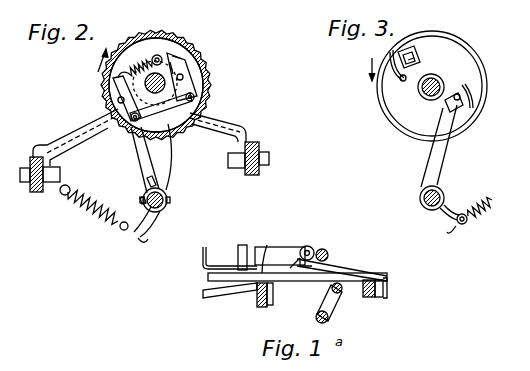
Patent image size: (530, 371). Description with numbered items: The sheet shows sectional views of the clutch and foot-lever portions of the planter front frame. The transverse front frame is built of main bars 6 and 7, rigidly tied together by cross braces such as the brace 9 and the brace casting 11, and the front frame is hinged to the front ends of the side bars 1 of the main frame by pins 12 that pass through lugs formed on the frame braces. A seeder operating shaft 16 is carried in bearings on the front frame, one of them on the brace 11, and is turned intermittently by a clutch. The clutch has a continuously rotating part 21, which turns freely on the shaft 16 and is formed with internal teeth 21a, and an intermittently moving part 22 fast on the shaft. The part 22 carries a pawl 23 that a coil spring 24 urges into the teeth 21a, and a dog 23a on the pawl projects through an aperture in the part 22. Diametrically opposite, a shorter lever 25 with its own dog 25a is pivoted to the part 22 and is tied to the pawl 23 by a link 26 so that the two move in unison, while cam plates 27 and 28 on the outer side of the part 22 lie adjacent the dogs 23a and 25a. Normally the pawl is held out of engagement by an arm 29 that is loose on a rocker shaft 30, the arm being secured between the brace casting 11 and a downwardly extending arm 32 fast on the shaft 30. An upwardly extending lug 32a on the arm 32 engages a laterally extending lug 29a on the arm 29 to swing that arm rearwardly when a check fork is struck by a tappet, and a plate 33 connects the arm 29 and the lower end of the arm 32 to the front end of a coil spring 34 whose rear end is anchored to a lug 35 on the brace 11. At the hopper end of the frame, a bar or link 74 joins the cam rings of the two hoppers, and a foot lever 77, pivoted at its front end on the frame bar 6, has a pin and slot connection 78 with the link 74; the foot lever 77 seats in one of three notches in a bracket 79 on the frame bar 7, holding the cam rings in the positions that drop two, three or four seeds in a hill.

In FIG. 1A, the side bar 1 is at (278, 250).
In FIG. 2, the main bar 6 is at (253, 175).
In FIG. 1A, the main bar 6 is at (370, 298).
In FIG. 2, the main bar 7 is at (34, 192).
In FIG. 1A, the main bar 7 is at (262, 306).
In FIG. 1A, the cross brace 9 is at (360, 272).
In FIG. 2, the cross brace 11 is at (244, 128).
In FIG. 1A, the pin 12 is at (308, 246).
In FIG. 2, the seeder operating shaft 16 is at (146, 82).
In FIG. 3, the seeder operating shaft 16 is at (422, 92).
In FIG. 1A, the seeder operating shaft 16 is at (328, 254).
In FIG. 2, the continuously rotating part 21 is at (202, 46).
In FIG. 3, the continuously rotating part 21 is at (487, 62).
In FIG. 2, the internal teeth 21a is at (204, 93).
In FIG. 2, the intermittently moving part 22 is at (198, 78).
In FIG. 3, the intermittently moving part 22 is at (468, 46).
In FIG. 2, the pawl 23 is at (116, 100).
In FIG. 3, the dog 23a is at (446, 108).
In FIG. 2, the coil spring 24 is at (158, 55).
In FIG. 2, the lever 25 is at (188, 64).
In FIG. 3, the lever 25 is at (418, 56).
In FIG. 3, the dog 25a is at (420, 60).
In FIG. 2, the link 26 is at (177, 128).
In FIG. 3, the cam plate 27 is at (474, 98).
In FIG. 3, the cam plate 28 is at (398, 80).
In FIG. 2, the arm 29 is at (141, 152).
In FIG. 3, the arm 29 is at (448, 153).
In FIG. 2, the lug 29a is at (148, 180).
In FIG. 2, the rocker shaft 30 is at (167, 206).
In FIG. 3, the rocker shaft 30 is at (422, 206).
In FIG. 2, the arm 32 is at (143, 239).
In FIG. 3, the arm 32 is at (449, 236).
In FIG. 2, the lug 32a is at (140, 200).
In FIG. 2, the plate 33 is at (124, 231).
In FIG. 2, the coil spring 34 is at (90, 212).
In FIG. 3, the coil spring 34 is at (486, 197).
In FIG. 2, the lug 35 is at (64, 196).
In FIG. 1A, the link 74 is at (220, 278).
In FIG. 1A, the foot lever 77 is at (338, 274).
In FIG. 1A, the pin and slot connection 78 is at (240, 262).
In FIG. 1A, the bracket 79 is at (264, 250).